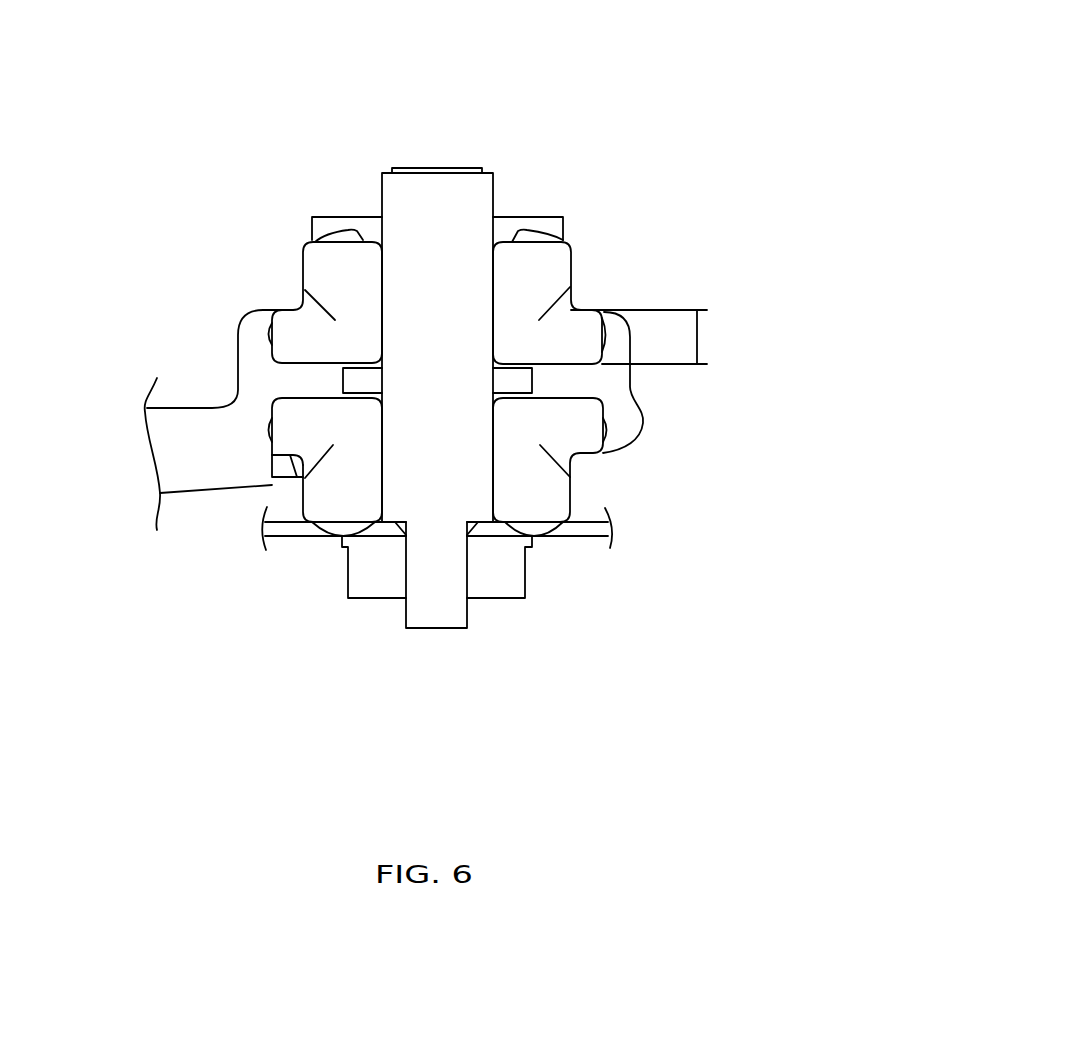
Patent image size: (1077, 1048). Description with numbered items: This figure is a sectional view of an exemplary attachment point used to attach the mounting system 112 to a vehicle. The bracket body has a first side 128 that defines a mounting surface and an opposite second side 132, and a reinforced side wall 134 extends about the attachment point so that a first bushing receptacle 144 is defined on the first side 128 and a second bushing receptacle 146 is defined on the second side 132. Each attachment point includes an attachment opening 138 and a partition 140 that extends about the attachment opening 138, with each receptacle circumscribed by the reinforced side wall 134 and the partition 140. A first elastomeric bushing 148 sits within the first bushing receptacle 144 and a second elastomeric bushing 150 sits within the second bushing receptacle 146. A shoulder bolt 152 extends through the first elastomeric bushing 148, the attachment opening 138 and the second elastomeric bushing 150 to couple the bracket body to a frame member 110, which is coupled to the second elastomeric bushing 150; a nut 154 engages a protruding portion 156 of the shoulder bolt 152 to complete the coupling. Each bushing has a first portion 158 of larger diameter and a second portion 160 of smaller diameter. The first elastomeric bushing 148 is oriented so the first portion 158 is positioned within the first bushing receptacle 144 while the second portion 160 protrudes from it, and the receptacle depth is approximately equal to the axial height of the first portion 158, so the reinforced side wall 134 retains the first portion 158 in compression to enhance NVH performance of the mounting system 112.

The frame member 110 is at (596, 535).
The mounting system 112 is at (653, 70).
The first side 128 is at (652, 240).
The second side 132 is at (623, 493).
The reinforced side wall 134 is at (250, 313).
The attachment opening 138 is at (347, 380).
The partition 140 is at (548, 380).
The first bushing receptacle 144 is at (286, 292).
The second bushing receptacle 146 is at (268, 497).
The first elastomeric bushing 148 is at (577, 240).
The second elastomeric bushing 150 is at (572, 483).
The shoulder bolt 152 is at (493, 180).
The nut 154 is at (512, 600).
The protruding portion 156 is at (405, 618).
The first portion 158 is at (578, 333).
The second portion 160 is at (543, 272).